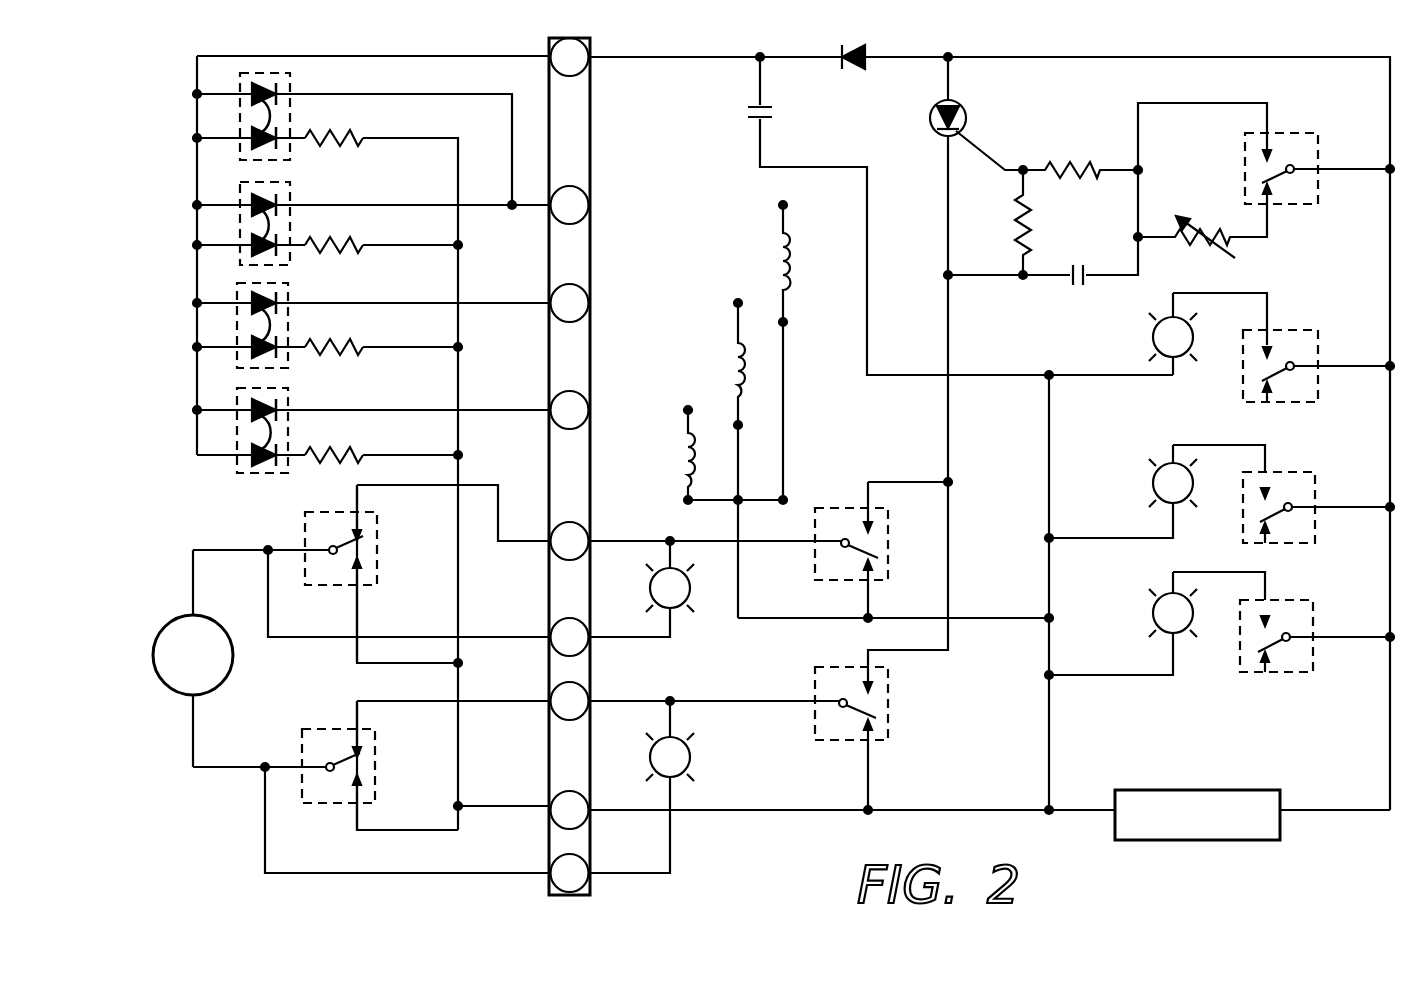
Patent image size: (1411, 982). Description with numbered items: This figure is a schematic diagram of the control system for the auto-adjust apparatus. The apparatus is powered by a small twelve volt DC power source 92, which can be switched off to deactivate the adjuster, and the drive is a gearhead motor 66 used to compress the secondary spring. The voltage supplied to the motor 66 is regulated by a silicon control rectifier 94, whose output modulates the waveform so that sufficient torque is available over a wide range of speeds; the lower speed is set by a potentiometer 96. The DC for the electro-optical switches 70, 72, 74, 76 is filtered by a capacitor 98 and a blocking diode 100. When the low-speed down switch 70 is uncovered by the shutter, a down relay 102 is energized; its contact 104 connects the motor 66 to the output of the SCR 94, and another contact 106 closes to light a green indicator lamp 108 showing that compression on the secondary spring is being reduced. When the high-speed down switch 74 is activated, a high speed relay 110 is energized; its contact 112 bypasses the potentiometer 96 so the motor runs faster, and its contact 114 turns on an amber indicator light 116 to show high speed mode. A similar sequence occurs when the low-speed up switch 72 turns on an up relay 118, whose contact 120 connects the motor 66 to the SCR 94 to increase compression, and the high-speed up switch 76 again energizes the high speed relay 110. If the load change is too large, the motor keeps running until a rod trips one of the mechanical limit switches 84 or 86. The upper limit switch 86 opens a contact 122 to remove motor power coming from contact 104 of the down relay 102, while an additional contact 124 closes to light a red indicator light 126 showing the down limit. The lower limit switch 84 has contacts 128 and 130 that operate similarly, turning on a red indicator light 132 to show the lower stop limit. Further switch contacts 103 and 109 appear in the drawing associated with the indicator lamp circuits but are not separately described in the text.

The gearhead motor 66 is at (168, 692).
The low-speed down switch 70 is at (238, 460).
The low-speed up switch 72 is at (238, 356).
The high-speed down switch 74 is at (240, 252).
The high-speed up switch 76 is at (240, 146).
The lower limit switch 84 is at (320, 574).
The upper limit switch 86 is at (320, 765).
The 12 volt DC power source 92 is at (1232, 840).
The silicon control rectifier 94 is at (965, 108).
The potentiometer 96 is at (1235, 250).
The capacitor 98 is at (752, 112).
The blocking diode 100 is at (858, 70).
The down relay 102 is at (684, 458).
The relay switch 103 is at (1280, 488).
The contact 104 is at (880, 693).
The contact 106 is at (1280, 618).
The green indicator lamp 108 is at (1153, 615).
The green indicator lamp 109 is at (1153, 480).
The high speed relay 110 is at (775, 256).
The contact 112 is at (1280, 150).
The contact 114 is at (1280, 345).
The amber indicator light 116 is at (1153, 337).
The up relay 118 is at (732, 362).
The contact 120 is at (880, 530).
The contact 122 is at (367, 750).
The contact 124 is at (367, 790).
The red indicator light 126 is at (692, 757).
The contact 128 is at (368, 532).
The contact 130 is at (368, 572).
The red indicator light 132 is at (680, 610).